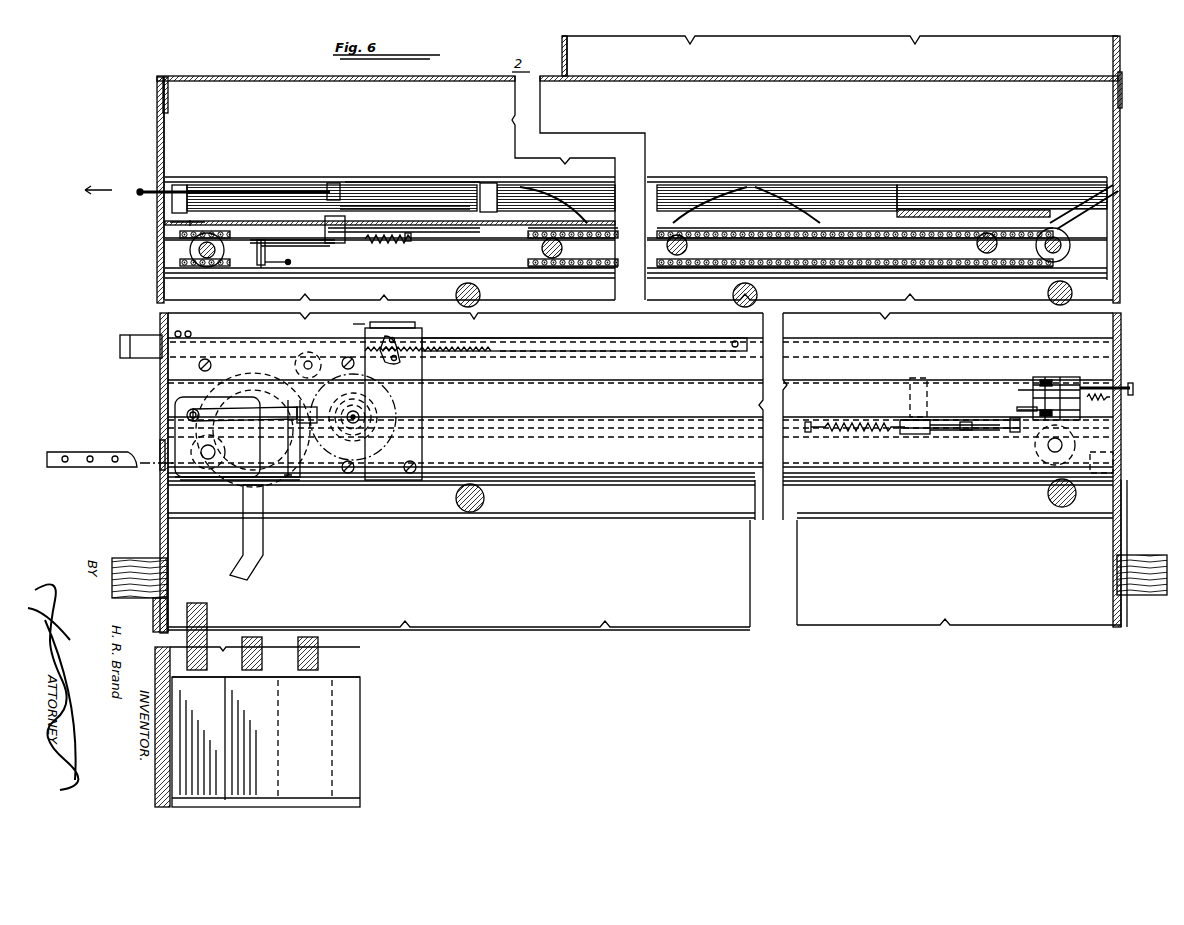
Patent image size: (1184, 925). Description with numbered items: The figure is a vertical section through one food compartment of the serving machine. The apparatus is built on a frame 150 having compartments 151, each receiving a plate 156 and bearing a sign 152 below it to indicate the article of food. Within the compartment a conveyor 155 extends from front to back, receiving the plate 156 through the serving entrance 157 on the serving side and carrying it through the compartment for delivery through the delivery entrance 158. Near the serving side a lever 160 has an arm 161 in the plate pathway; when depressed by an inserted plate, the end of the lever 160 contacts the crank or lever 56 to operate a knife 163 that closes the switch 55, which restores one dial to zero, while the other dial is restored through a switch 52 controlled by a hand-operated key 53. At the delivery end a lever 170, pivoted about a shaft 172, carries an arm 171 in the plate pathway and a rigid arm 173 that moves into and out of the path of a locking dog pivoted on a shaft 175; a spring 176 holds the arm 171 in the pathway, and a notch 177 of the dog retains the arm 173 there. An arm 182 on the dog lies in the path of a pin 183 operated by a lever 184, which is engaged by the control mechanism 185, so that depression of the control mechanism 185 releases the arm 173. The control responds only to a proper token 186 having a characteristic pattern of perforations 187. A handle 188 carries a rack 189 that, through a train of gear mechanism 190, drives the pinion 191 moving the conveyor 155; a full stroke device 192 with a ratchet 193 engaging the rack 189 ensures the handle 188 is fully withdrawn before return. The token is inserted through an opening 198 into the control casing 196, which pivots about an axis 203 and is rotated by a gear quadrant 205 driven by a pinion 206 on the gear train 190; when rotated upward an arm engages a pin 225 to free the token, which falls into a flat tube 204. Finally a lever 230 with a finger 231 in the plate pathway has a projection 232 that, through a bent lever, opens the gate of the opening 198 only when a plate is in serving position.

The frame 150 is at (215, 76).
The compartment 151 is at (1067, 148).
The sign 152 is at (1120, 283).
The conveyor 155 is at (190, 249).
The plate 156 is at (405, 190).
The serving entrance 157 is at (1120, 168).
The delivery entrance 158 is at (158, 152).
The lever 160 is at (900, 434).
The arm 161 is at (910, 398).
The knife 163 is at (1017, 409).
The lever 170 is at (310, 186).
The arm 171 is at (192, 186).
The shaft 172 is at (340, 207).
The arm 173 is at (370, 241).
The shaft 175 is at (262, 268).
The spring 176 is at (408, 241).
The notch 177 is at (298, 245).
The arm 182 is at (292, 263).
The pin 183 is at (278, 260).
The lever 184 is at (295, 443).
The control mechanism 185 is at (236, 437).
The token 186 is at (80, 470).
The perforations 187 is at (90, 455).
The handle 188 is at (120, 350).
The rack 189 is at (448, 342).
The train of gear mechanism 190 is at (278, 385).
The pinion 191 is at (180, 485).
The full stroke device 192 is at (395, 326).
The ratchet 193 is at (388, 365).
The control casing 196 is at (288, 475).
The opening 198 is at (160, 465).
The axis 203 is at (193, 408).
The flat tube 204 is at (263, 510).
The gear quadrant 205 is at (226, 448).
The pinion 206 is at (305, 379).
The pin 225 is at (192, 334).
The lever 230 is at (420, 245).
The finger 231 is at (345, 183).
The projection 232 is at (176, 221).
The switch 52 is at (1052, 378).
The key 53 is at (1133, 388).
The switch 55 is at (1074, 449).
The lever 56 is at (968, 432).